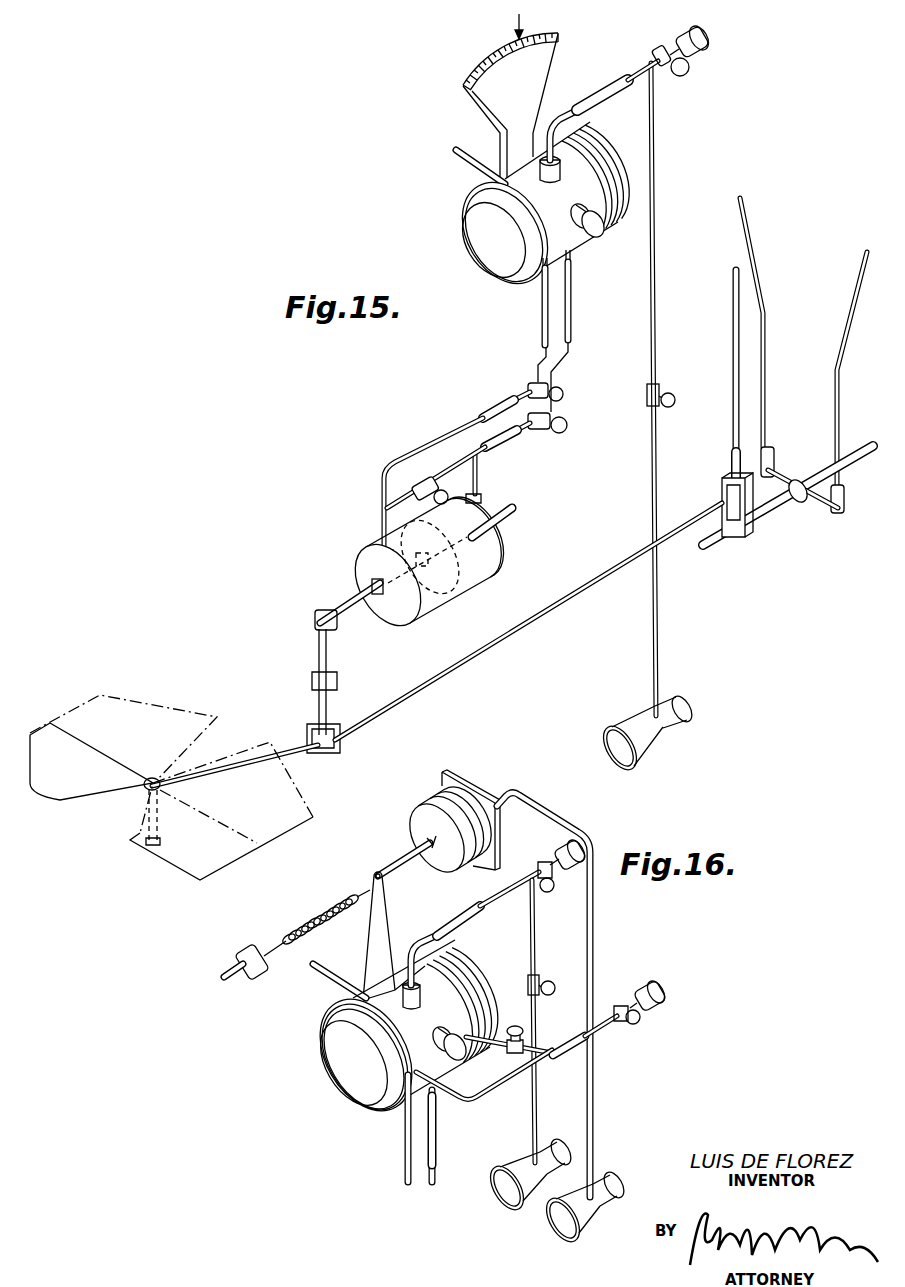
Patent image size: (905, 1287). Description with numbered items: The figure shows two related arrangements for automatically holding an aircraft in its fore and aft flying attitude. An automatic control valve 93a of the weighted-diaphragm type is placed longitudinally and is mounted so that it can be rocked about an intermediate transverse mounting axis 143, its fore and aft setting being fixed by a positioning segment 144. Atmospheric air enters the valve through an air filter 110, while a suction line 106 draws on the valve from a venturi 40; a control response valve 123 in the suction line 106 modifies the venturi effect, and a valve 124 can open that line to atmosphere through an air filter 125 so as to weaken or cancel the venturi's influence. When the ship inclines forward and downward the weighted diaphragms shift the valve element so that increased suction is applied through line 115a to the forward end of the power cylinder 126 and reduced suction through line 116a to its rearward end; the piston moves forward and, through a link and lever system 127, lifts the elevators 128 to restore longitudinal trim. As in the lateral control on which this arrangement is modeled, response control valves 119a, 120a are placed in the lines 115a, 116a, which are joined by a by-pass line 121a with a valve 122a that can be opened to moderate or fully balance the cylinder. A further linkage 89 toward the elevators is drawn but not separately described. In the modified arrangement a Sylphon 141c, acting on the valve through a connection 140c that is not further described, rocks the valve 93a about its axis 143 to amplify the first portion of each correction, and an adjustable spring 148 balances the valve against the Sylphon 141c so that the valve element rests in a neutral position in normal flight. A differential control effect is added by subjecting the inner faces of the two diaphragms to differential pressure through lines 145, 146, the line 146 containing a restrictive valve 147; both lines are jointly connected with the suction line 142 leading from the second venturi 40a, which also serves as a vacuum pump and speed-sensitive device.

In FIG. 15, the positioning segment 144 is at (560, 32).
In FIG. 15, the intermediate transverse mounting axis 143 is at (458, 146).
In FIG. 16, the intermediate transverse mounting axis 143 is at (326, 974).
In FIG. 15, the control valve 93a is at (470, 220).
In FIG. 16, the control valve 93a is at (342, 1082).
In FIG. 15, the air filter 110 is at (598, 238).
In FIG. 15, the suction line 106 is at (651, 471).
In FIG. 16, the suction line 106 is at (538, 1106).
In FIG. 15, the line 115a is at (545, 352).
In FIG. 15, the air filter 125 is at (708, 41).
In FIG. 16, the air filter 125 is at (563, 845).
In FIG. 15, the valve 124 is at (675, 75).
In FIG. 16, the valve 124 is at (548, 892).
In FIG. 15, the control response valve 123 is at (662, 392).
In FIG. 16, the control response valve 123 is at (558, 971).
In FIG. 15, the response control valve 120a is at (528, 387).
In FIG. 15, the response control valve 119a is at (567, 428).
In FIG. 15, the line 116a is at (426, 450).
In FIG. 15, the by-pass line 121a is at (445, 468).
In FIG. 15, the by-pass valve 122a is at (410, 486).
In FIG. 15, the power cylinder 126 is at (470, 572).
In FIG. 15, the link and lever system 127 is at (317, 648).
In FIG. 15, the rods 89 is at (836, 394).
In FIG. 15, the elevators 128 is at (140, 837).
In FIG. 15, the venturi 40a is at (641, 727).
In FIG. 16, the venturi 40a is at (607, 1183).
In FIG. 16, the venturi 40 is at (522, 1167).
In FIG. 16, the Sylphon 141c is at (440, 803).
In FIG. 16, the rod 140c is at (388, 918).
In FIG. 16, the adjustable spring 148 is at (324, 921).
In FIG. 16, the suction line 142 is at (560, 814).
In FIG. 16, the differential suction line 146 is at (488, 1052).
In FIG. 16, the restrictive valve 147 is at (513, 1026).
In FIG. 16, the differential suction line 145 is at (450, 1101).